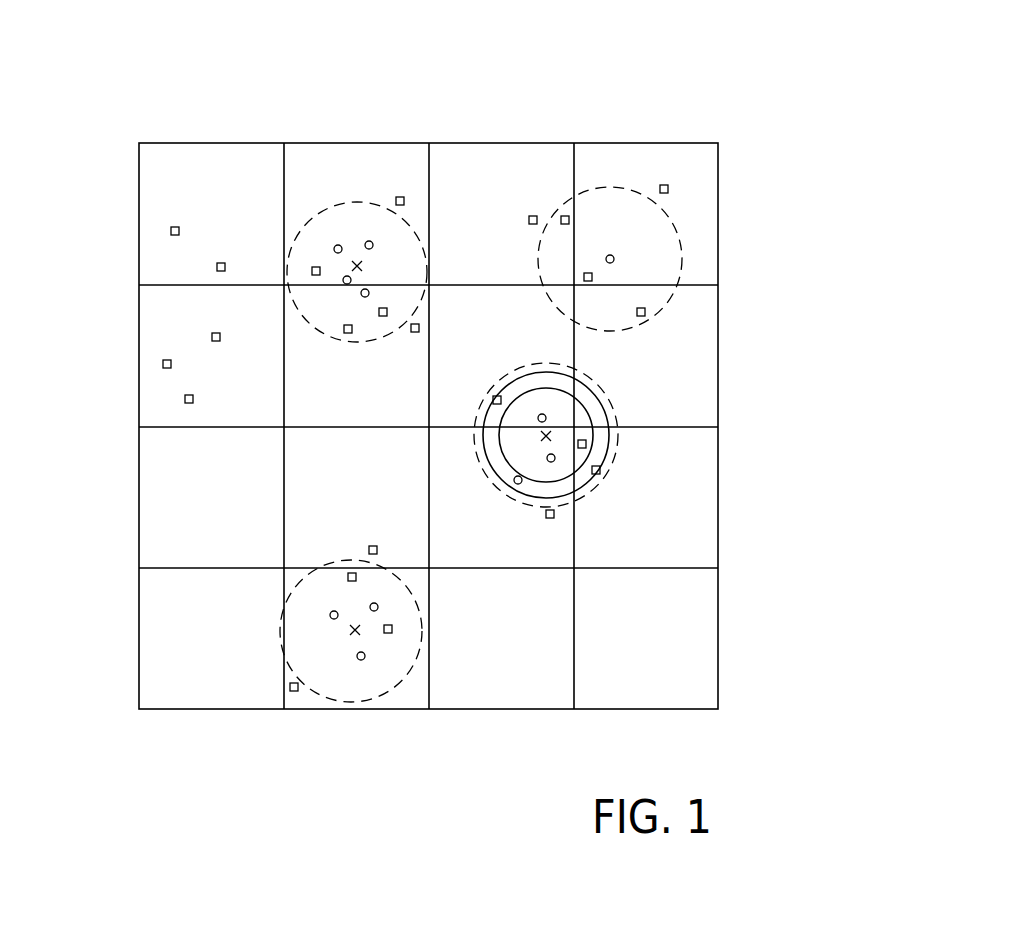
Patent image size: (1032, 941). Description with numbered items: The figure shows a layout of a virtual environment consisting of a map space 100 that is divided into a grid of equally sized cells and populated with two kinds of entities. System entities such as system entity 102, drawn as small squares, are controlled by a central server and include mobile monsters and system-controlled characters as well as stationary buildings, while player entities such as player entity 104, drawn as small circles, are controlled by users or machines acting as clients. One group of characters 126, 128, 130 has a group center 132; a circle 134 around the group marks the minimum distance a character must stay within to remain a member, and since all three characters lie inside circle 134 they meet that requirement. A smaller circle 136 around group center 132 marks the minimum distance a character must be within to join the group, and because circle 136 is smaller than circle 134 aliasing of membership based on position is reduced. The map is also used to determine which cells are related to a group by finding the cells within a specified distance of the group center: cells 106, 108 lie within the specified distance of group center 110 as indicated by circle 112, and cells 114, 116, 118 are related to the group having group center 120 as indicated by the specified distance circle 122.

The map space 100 is at (540, 143).
The system entity 102 is at (176, 226).
The player entity 104 is at (336, 245).
The cell 106 is at (420, 152).
The cell 108 is at (300, 392).
The group center 110 is at (356, 262).
The circle 112 is at (374, 200).
The cell 114 is at (212, 682).
The cell 116 is at (300, 514).
The cell 118 is at (422, 692).
The group center 120 is at (357, 632).
The specified distance circle 122 is at (315, 690).
The character 126 is at (545, 418).
The character 128 is at (554, 460).
The character 130 is at (519, 484).
The group center 132 is at (548, 435).
The circle 134 is at (610, 407).
The circle 136 is at (593, 453).